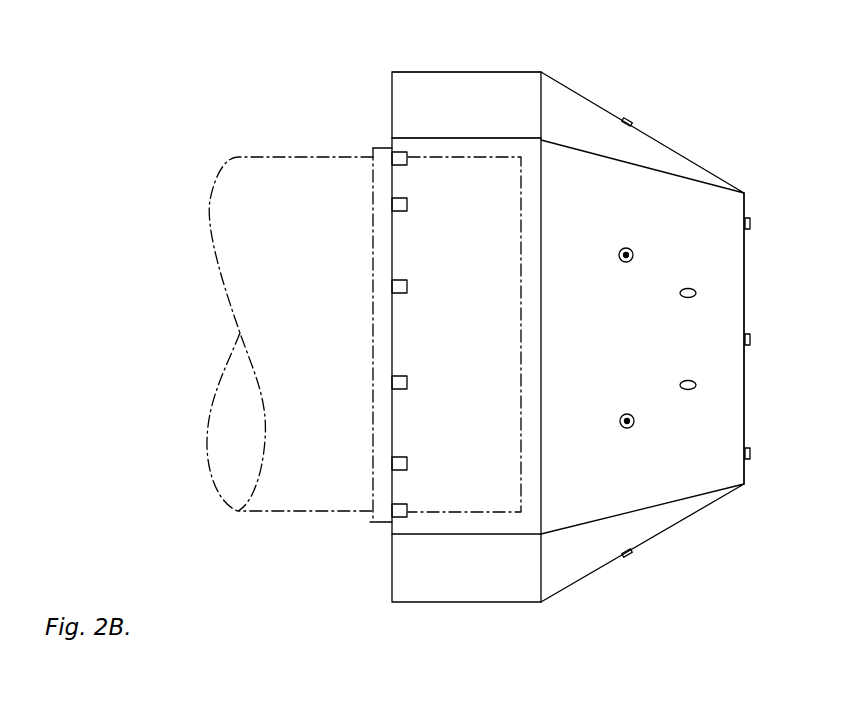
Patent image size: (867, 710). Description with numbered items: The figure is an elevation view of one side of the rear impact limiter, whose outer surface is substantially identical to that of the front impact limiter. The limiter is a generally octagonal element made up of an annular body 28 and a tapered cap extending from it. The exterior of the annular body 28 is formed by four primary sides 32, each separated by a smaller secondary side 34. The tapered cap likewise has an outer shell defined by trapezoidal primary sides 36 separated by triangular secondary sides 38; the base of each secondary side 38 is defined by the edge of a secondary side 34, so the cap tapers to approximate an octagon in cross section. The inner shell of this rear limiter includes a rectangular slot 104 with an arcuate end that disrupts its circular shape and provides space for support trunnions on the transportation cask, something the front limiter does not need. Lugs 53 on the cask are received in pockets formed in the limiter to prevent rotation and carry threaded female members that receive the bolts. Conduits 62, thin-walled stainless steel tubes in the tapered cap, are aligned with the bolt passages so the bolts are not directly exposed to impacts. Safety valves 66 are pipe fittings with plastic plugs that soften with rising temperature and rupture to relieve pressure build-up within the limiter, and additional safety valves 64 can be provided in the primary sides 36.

The annular body 28 is at (450, 603).
The primary side 32 is at (392, 528).
The secondary side 34 is at (398, 113).
The primary side 36 is at (634, 358).
The secondary side 38 is at (665, 157).
The lug 53 is at (398, 202).
The conduit 62 is at (696, 293).
The safety valve 64 is at (630, 121).
The safety valve 66 is at (752, 223).
The rectangular slot 104 is at (437, 157).